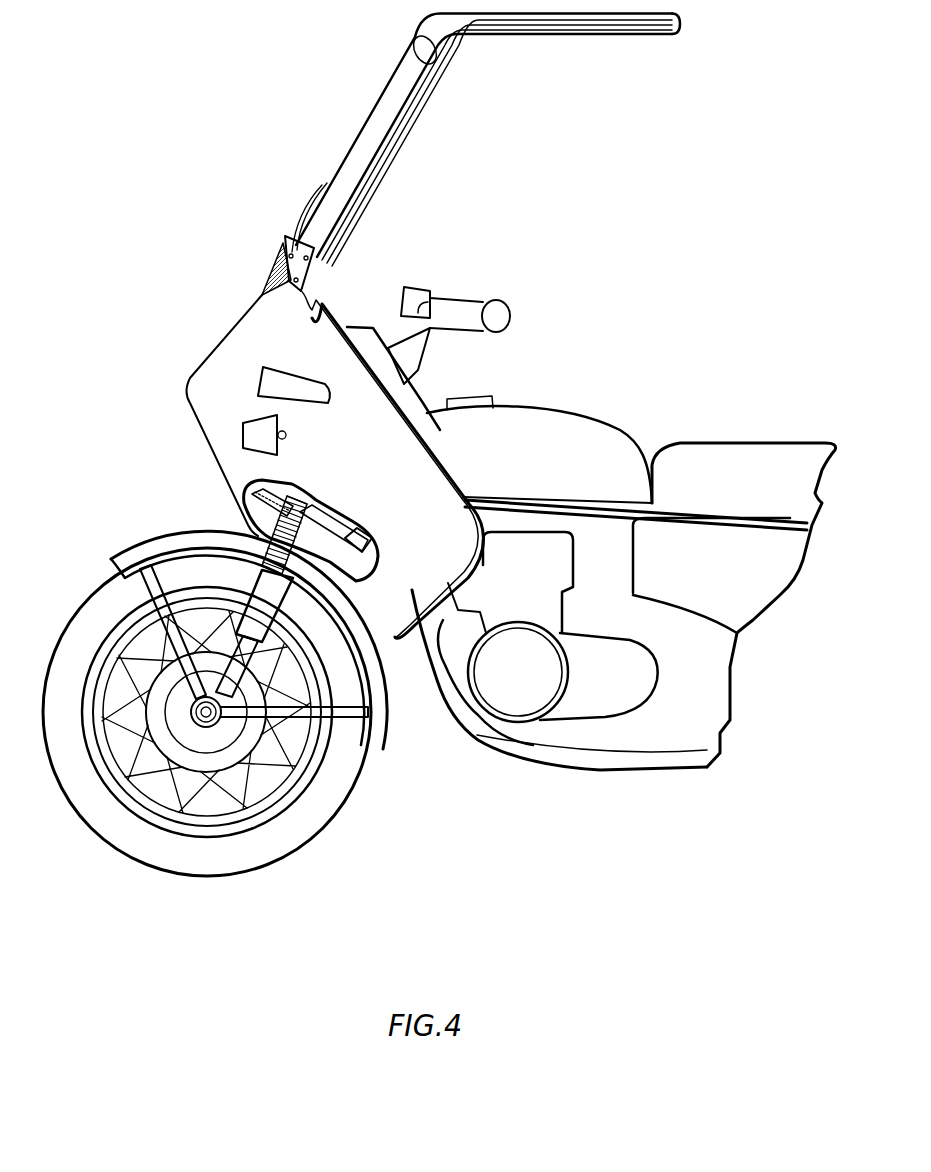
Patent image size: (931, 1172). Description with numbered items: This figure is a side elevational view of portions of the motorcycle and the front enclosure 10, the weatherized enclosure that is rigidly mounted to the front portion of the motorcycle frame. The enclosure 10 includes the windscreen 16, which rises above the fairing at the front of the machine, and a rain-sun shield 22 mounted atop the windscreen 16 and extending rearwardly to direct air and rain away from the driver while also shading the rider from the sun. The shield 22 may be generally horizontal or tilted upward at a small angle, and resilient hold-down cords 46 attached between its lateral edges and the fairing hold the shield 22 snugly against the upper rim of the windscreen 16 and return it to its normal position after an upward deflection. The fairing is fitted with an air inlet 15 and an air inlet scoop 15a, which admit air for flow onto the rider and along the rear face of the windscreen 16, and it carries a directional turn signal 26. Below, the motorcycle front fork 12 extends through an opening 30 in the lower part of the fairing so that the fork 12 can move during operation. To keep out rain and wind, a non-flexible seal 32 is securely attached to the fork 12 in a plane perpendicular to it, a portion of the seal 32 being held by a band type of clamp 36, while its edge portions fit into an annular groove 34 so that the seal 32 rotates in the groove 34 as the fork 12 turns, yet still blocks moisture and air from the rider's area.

The enclosure 10 is at (172, 400).
The front fork 12 is at (227, 537).
The air inlet 15 is at (272, 265).
The air inlet scoop 15a is at (283, 378).
The windscreen 16 is at (327, 185).
The rain-sun shield 22 is at (670, 3).
The directional turn signal 26 is at (250, 432).
The opening 30 is at (263, 528).
The seal 32 is at (335, 532).
The annular groove 34 is at (362, 548).
The clamp 36 is at (297, 486).
The hold-down cord 46 is at (433, 78).